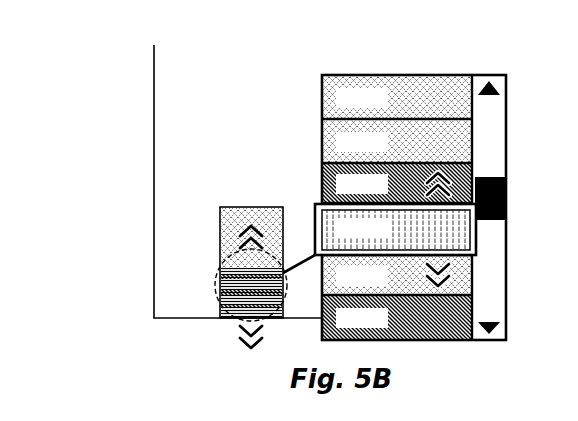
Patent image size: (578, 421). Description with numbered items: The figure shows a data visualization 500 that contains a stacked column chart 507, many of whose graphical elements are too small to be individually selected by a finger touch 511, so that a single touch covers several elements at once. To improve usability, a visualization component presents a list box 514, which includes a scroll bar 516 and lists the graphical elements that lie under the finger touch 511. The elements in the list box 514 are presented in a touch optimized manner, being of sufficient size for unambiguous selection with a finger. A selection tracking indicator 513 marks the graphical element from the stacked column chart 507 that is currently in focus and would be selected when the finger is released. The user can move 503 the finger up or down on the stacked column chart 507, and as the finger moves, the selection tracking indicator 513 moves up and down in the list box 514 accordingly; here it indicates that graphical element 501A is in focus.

The data visualization 500 is at (221, 85).
The graphical element 501A is at (216, 292).
The move 503 is at (175, 282).
The stacked column chart 507 is at (240, 210).
The finger touch 511 is at (283, 303).
The selection tracking indicator 513 is at (347, 182).
The list box 514 is at (404, 175).
The scroll bar 516 is at (525, 207).